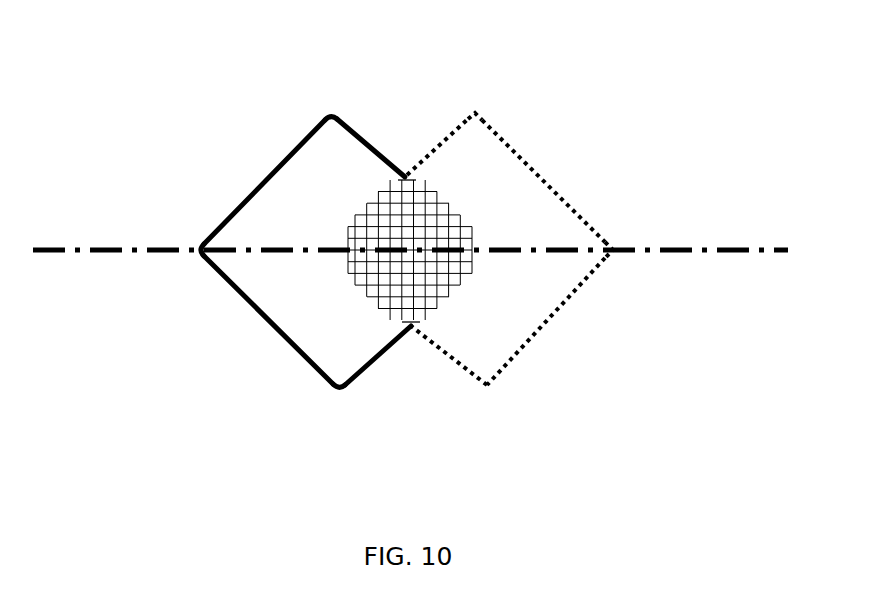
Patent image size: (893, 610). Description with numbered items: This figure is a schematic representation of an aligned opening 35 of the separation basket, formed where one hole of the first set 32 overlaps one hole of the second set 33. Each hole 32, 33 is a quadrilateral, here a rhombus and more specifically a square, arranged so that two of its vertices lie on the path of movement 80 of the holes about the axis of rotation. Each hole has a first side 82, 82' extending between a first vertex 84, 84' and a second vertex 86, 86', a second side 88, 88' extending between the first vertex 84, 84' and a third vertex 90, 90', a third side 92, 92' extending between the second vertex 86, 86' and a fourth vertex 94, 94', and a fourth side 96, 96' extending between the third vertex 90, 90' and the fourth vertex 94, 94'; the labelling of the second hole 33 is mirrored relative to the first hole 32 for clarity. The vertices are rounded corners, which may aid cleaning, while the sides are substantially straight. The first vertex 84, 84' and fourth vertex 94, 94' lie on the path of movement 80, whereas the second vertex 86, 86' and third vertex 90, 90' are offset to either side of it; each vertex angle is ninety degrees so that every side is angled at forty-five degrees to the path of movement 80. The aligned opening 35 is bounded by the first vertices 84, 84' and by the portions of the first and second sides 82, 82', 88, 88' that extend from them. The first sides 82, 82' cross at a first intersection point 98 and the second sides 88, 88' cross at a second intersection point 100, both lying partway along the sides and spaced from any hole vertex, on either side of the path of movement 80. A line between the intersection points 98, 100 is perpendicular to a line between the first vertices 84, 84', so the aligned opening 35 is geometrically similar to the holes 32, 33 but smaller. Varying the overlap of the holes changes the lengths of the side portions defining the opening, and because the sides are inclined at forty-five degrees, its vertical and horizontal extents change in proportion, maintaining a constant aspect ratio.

The path of movement 80 is at (110, 253).
The hole of the second set 33 is at (286, 258).
The hole of the first set 32 is at (530, 252).
The aligned opening 35 is at (410, 252).
The first side 82 is at (431, 125).
The first side 82' is at (452, 221).
The first vertex 84 is at (319, 230).
The first vertex 84' is at (501, 235).
The second vertex 86 is at (452, 86).
The second vertex 86' is at (309, 87).
The second side 88 is at (368, 281).
The second side 88' is at (383, 380).
The third vertex 90 is at (457, 389).
The third vertex 90' is at (334, 423).
The third side 92 is at (543, 175).
The third side 92' is at (264, 167).
The fourth vertex 94 is at (635, 226).
The fourth vertex 94' is at (177, 223).
The fourth side 96 is at (546, 337).
The fourth side 96' is at (268, 320).
The first intersection point 98 is at (405, 176).
The second intersection point 100 is at (412, 328).